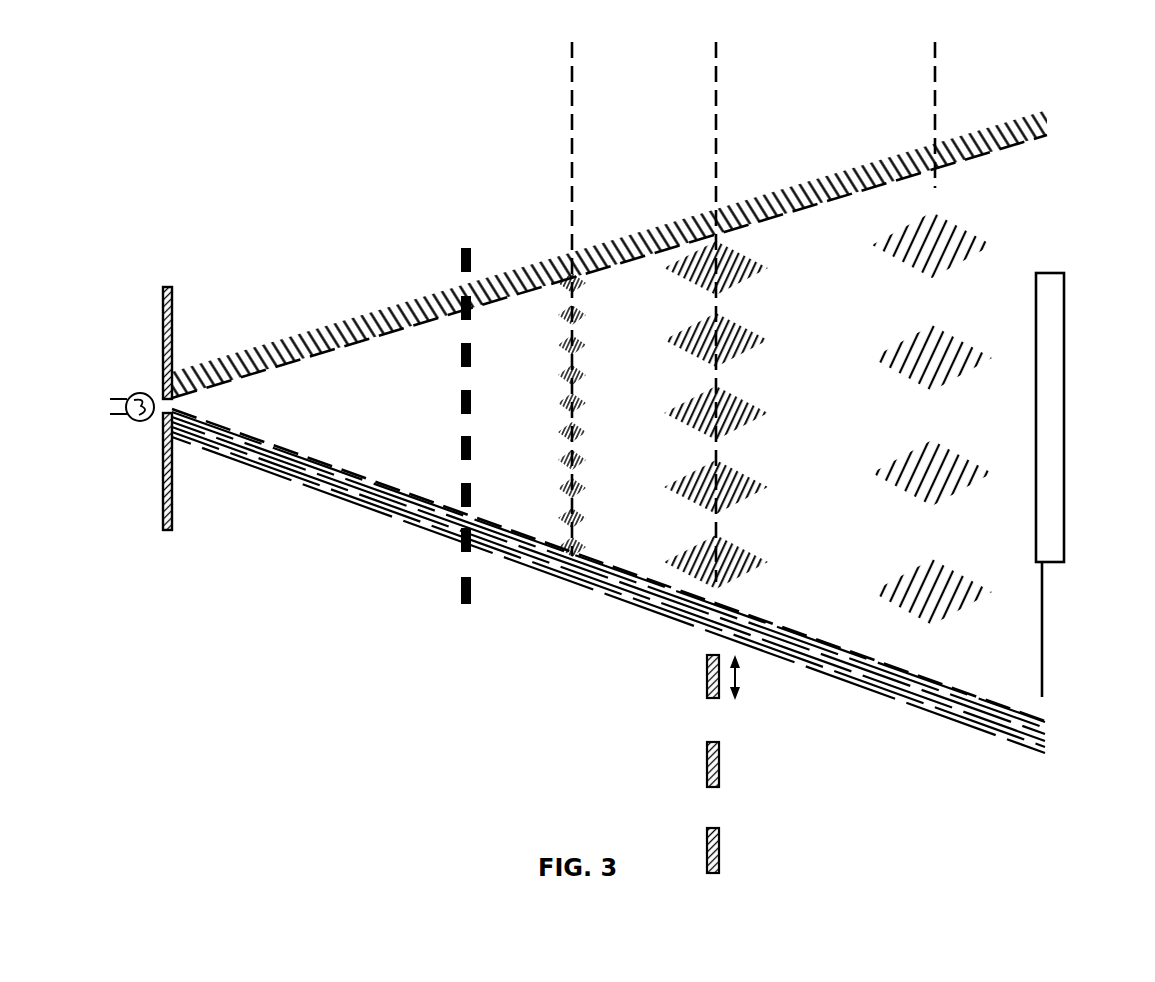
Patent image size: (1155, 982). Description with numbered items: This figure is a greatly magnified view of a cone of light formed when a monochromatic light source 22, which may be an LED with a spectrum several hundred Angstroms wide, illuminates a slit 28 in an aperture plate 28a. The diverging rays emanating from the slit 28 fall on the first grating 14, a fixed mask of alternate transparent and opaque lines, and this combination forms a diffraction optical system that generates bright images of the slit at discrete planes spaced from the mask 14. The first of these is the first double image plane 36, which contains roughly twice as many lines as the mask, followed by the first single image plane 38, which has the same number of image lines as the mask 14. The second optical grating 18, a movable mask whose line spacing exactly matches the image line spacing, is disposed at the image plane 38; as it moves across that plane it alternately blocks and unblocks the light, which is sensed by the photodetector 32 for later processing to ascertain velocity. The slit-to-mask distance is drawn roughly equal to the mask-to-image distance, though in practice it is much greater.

The first grating 14 is at (460, 588).
The second optical grating 18 is at (720, 756).
The monochromatic light source 22 is at (133, 397).
The slit 28 is at (163, 414).
The aperture plate 28a is at (162, 455).
The photodetector 32 is at (1064, 330).
The first double image plane 36 is at (574, 104).
The first single image plane 38 is at (718, 82).